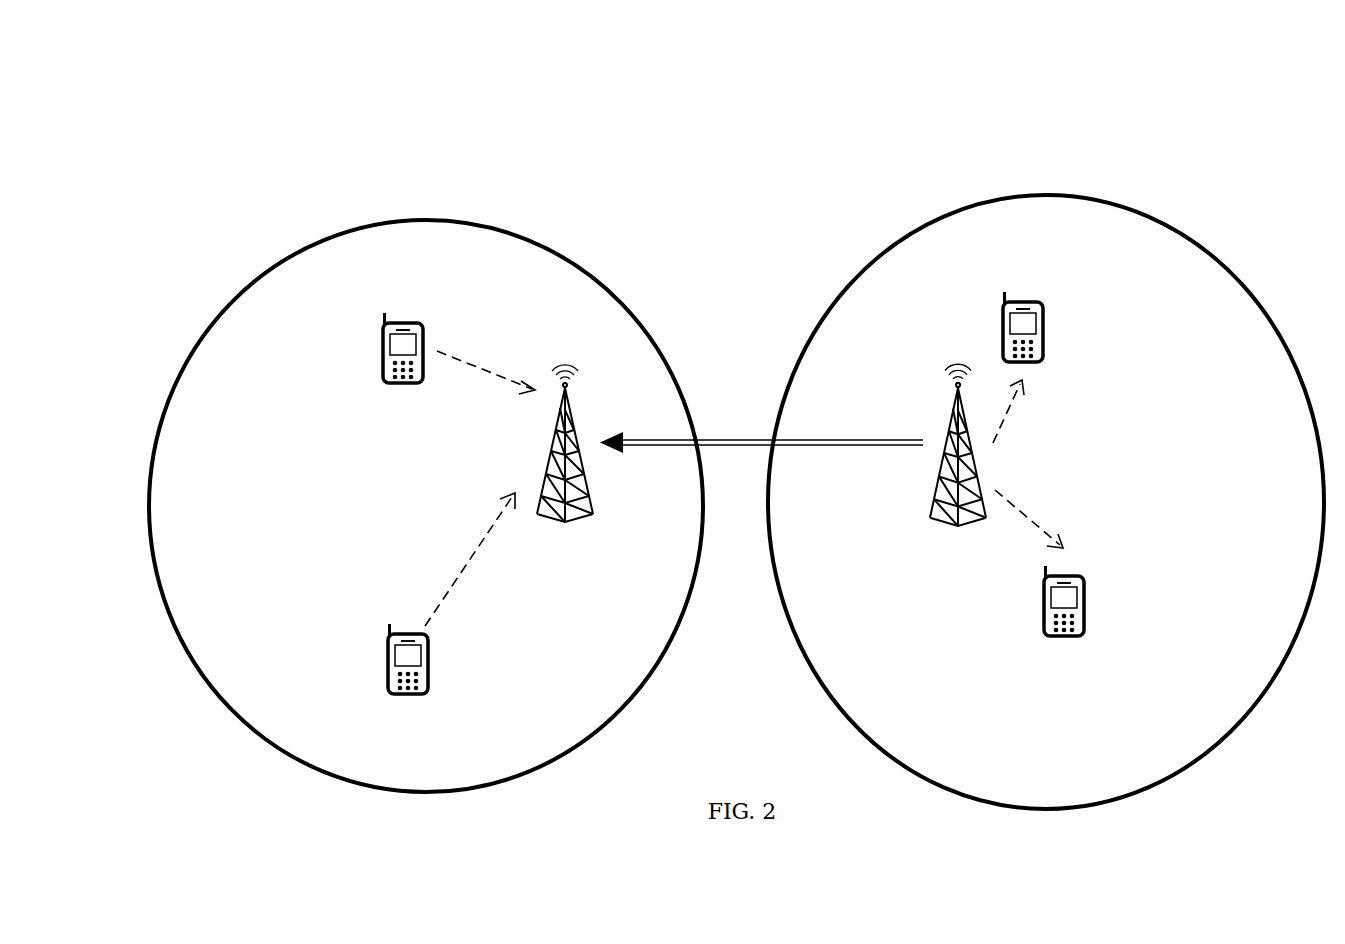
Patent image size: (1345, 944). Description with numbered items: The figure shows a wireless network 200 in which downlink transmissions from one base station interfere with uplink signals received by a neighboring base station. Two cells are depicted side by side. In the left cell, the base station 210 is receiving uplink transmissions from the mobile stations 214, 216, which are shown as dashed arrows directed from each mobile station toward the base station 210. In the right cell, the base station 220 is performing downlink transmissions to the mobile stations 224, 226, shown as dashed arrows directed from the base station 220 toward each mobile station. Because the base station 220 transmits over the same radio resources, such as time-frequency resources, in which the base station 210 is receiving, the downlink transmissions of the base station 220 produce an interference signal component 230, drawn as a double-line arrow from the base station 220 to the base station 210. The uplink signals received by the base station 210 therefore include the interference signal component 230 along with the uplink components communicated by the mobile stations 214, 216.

The network 200 is at (173, 106).
The base station 210 is at (561, 350).
The mobile station 214 is at (409, 697).
The mobile station 216 is at (366, 348).
The base station 220 is at (937, 357).
The mobile station 224 is at (1066, 640).
The mobile station 226 is at (1022, 278).
The interference signal component 230 is at (739, 438).